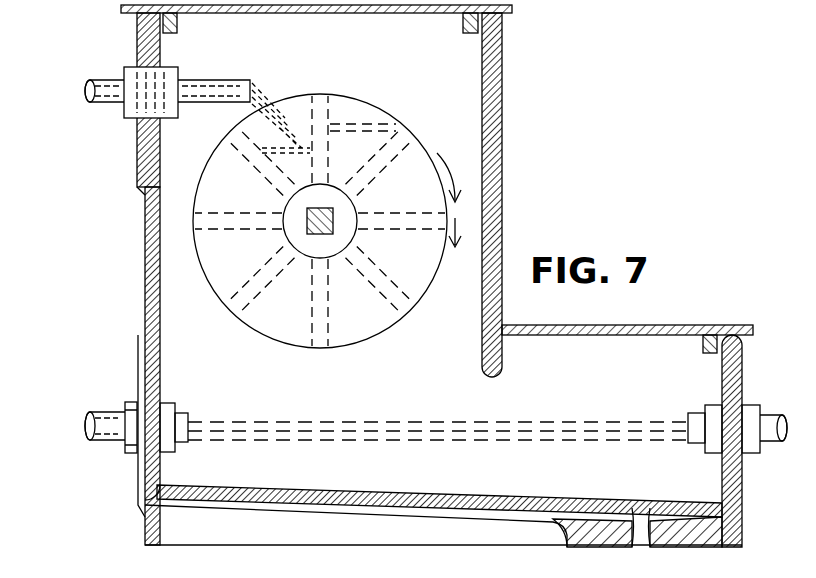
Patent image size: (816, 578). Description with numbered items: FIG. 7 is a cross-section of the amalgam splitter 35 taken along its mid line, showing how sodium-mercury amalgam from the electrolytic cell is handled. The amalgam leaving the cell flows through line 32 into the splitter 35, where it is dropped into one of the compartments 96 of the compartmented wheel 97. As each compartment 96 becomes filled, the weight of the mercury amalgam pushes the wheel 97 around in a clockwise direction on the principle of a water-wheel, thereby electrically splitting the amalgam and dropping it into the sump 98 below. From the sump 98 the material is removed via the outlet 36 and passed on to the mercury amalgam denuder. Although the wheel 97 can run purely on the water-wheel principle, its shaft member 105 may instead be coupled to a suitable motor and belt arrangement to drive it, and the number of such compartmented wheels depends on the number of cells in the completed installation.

The line 32 is at (111, 80).
The amalgam splitter 35 is at (145, 242).
The outlet 36 is at (641, 508).
The compartment 96 is at (357, 108).
The compartmented wheel 97 is at (312, 93).
The sump 98 is at (450, 422).
The shaft member 105 is at (343, 232).